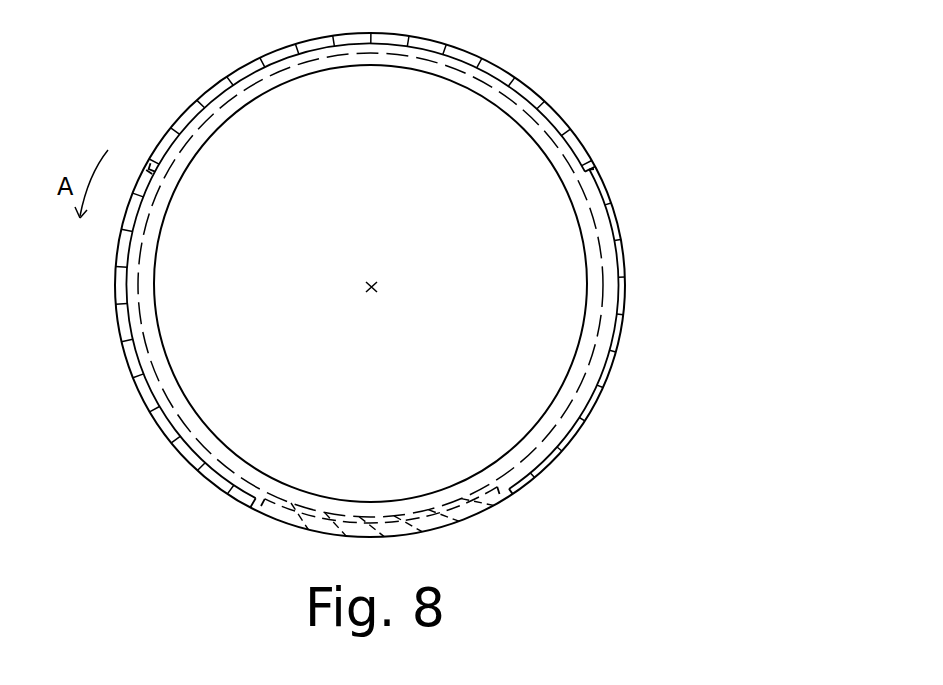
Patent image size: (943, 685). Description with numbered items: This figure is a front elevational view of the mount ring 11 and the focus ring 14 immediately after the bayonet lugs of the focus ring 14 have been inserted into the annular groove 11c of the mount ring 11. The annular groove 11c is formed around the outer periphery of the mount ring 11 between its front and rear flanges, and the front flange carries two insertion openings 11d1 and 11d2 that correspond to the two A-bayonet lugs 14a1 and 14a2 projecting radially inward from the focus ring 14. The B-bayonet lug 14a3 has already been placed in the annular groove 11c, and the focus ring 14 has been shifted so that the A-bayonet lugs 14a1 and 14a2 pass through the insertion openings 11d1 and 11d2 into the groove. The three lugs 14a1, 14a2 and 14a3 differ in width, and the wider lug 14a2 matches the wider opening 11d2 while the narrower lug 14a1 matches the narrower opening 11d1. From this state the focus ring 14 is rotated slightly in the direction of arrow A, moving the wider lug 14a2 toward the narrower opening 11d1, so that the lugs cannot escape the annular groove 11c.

The mount ring 11 is at (443, 78).
The focus ring 14 is at (547, 97).
The first bayonet lug 14a1 is at (172, 150).
The second bayonet lug 14a2 is at (568, 135).
The third bayonet lug 14a3 is at (307, 515).
The insertion opening 11d1 is at (152, 179).
The insertion opening 11d2 is at (592, 171).
The annular groove 11c is at (492, 467).